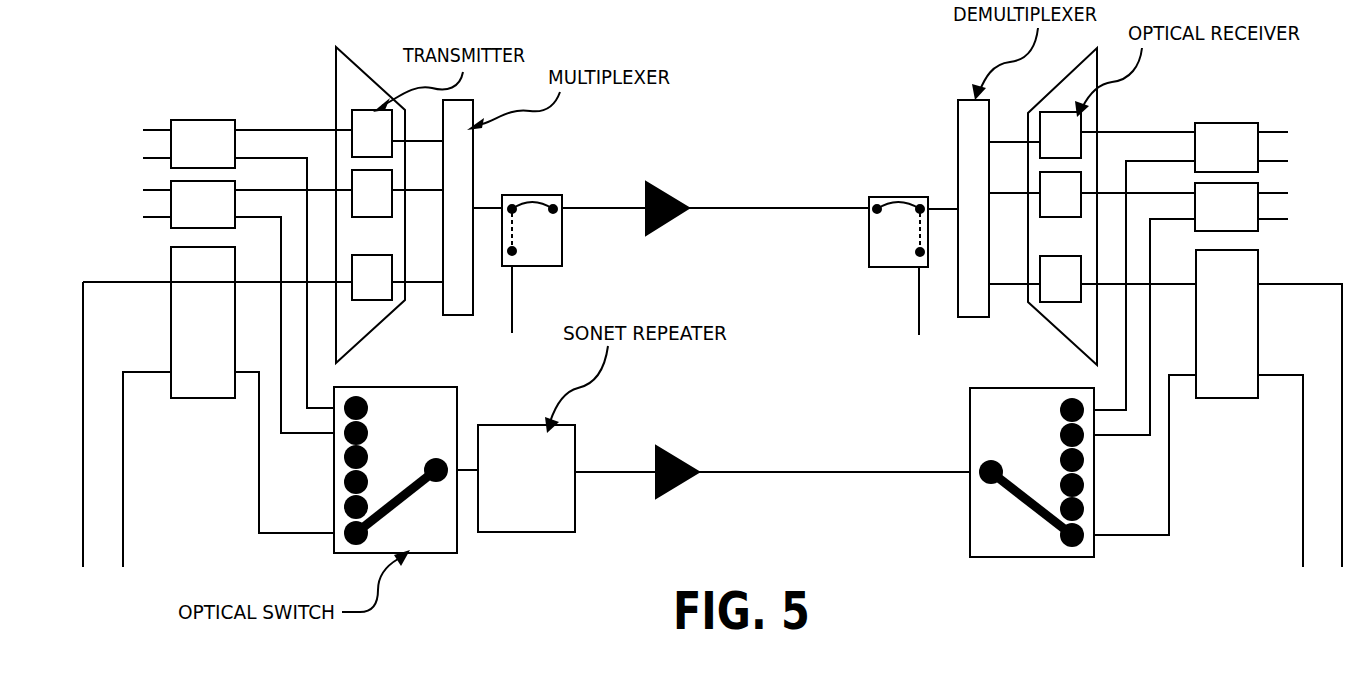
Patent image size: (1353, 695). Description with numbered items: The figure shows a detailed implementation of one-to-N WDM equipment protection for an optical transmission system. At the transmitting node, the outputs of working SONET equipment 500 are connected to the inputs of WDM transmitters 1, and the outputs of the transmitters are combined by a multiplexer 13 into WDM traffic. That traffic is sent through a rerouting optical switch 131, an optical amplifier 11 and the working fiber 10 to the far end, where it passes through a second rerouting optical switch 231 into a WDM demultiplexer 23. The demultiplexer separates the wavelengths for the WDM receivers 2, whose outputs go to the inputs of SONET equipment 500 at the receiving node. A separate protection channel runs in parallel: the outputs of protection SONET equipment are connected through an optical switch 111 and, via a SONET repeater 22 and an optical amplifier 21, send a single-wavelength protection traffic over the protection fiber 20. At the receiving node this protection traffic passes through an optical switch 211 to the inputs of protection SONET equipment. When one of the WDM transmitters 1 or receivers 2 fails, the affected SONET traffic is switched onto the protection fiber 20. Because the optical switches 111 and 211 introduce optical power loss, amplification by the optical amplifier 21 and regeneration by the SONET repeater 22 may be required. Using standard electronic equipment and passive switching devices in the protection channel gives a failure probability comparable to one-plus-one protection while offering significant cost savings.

The SONET equipment 500 is at (715, 259).
The WDM transmitter 1 is at (370, 205).
The multiplexer 13 is at (458, 207).
The rerouting optical switch 131 is at (532, 264).
The optical amplifier 11 is at (672, 201).
The working fiber 10 is at (779, 194).
The rerouting optical switch 231 is at (898, 266).
The WDM demultiplexer 23 is at (973, 208).
The WDM receiver 2 is at (1062, 206).
The optical switch 111 is at (395, 470).
The SONET repeater 22 is at (526, 478).
The optical amplifier 21 is at (682, 465).
The protection fiber 20 is at (834, 458).
The optical switch 211 is at (1032, 472).